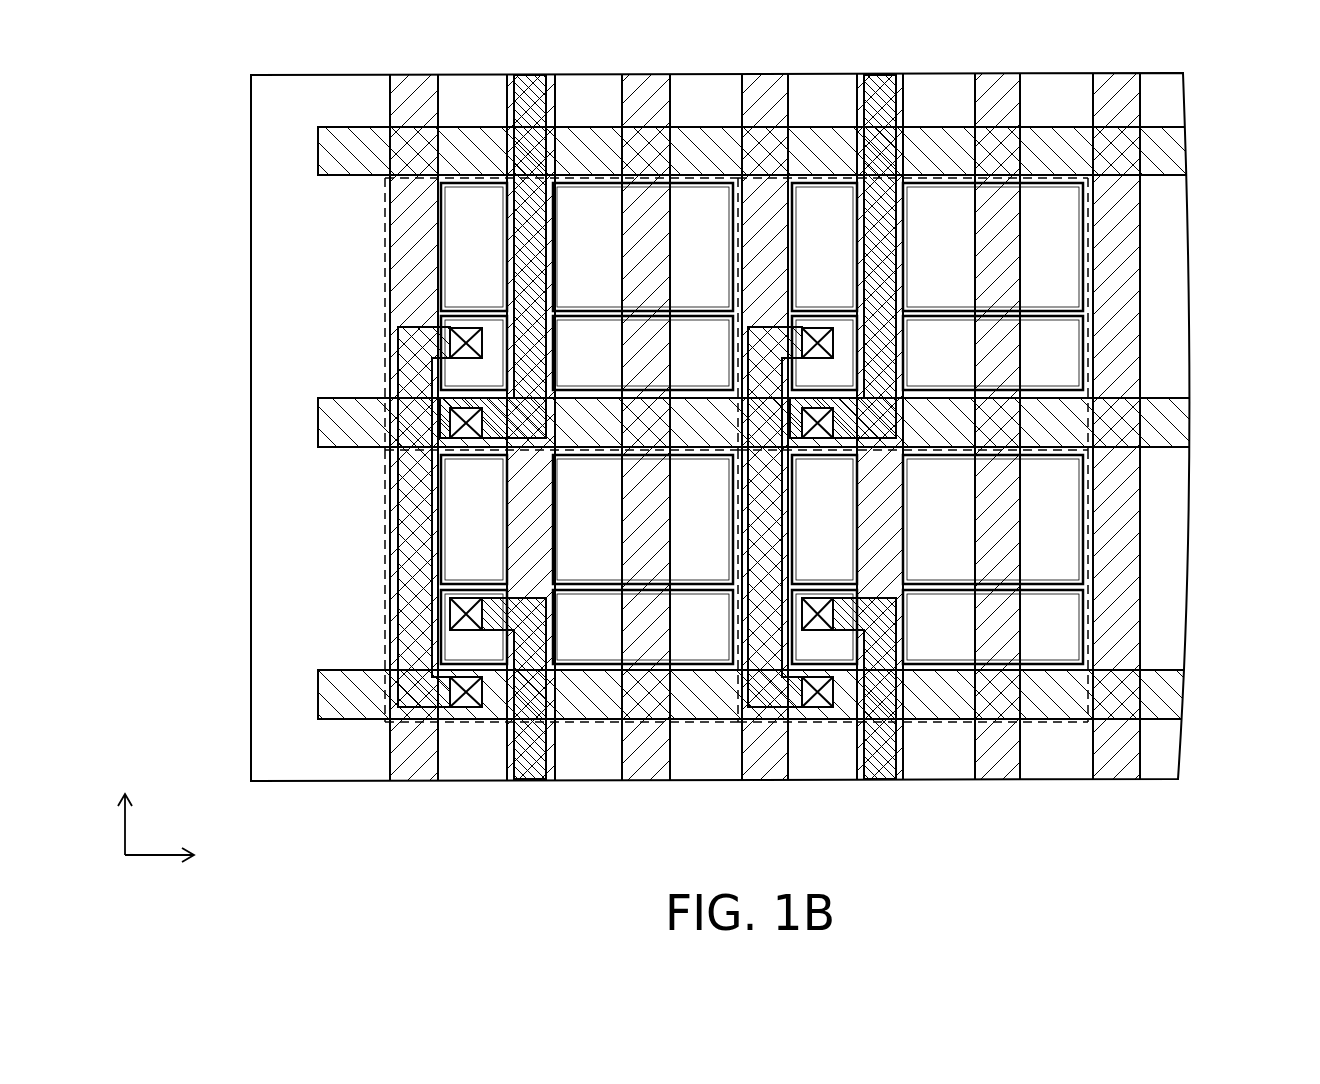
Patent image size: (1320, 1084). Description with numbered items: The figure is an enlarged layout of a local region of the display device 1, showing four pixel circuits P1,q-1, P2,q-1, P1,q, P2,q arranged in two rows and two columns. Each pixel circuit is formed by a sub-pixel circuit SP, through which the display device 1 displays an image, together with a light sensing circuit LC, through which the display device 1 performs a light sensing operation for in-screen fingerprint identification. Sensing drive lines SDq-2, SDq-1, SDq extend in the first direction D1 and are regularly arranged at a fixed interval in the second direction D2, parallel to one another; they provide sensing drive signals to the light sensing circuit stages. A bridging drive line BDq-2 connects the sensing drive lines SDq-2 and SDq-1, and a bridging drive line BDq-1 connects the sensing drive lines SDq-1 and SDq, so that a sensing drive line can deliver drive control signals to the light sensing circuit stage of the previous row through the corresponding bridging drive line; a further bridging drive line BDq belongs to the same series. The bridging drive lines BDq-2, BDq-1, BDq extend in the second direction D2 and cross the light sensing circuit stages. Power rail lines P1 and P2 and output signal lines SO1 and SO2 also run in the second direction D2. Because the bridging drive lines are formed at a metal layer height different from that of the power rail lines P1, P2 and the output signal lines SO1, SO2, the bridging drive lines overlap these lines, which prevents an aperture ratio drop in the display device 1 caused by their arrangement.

The display device 1 is at (1286, 811).
The sensing drive line SDq-2 is at (322, 150).
The sensing drive line SDq-1 is at (322, 428).
The sensing drive line SDq is at (325, 695).
The bridging drive line BDq-2 is at (512, 262).
The bridging drive line BDq-1 is at (400, 362).
The bridging drive line BDq is at (492, 606).
The pixel circuit P1,q-1 is at (385, 313).
The pixel circuit P2,q-1 is at (1088, 205).
The pixel circuit P1,q is at (385, 603).
The pixel circuit P2,q is at (1088, 623).
The power rail line P1 is at (765, 427).
The power rail line P2 is at (821, 427).
The output signal line SO1 is at (531, 427).
The output signal line SO2 is at (880, 427).
The sub-pixel circuit SP is at (602, 221).
The light sensing circuit LC is at (599, 357).
The first direction D1 is at (127, 803).
The second direction D2 is at (181, 852).